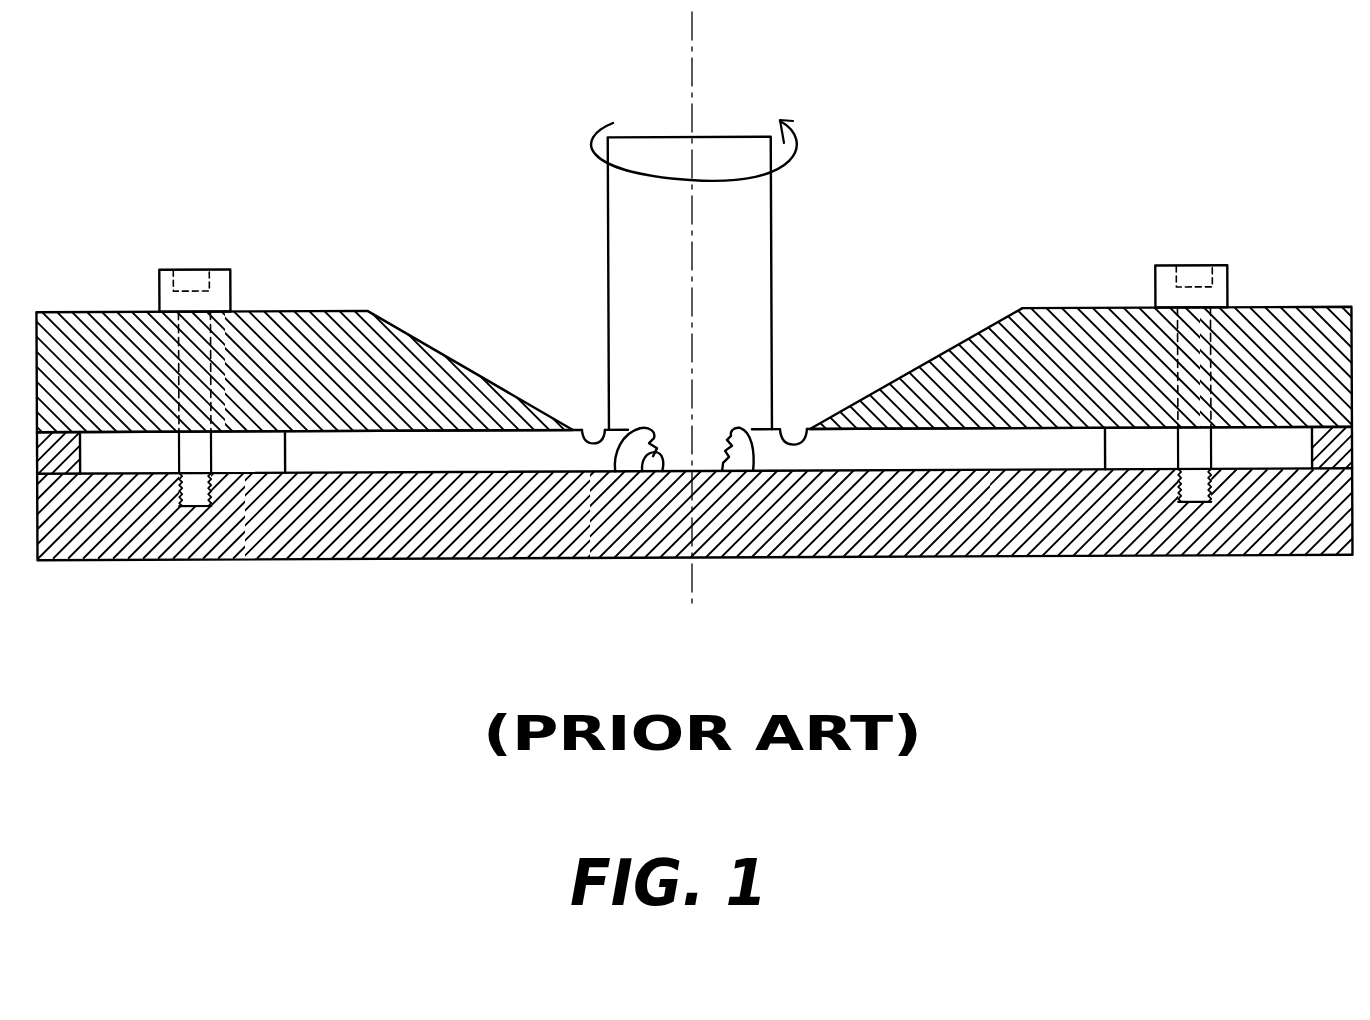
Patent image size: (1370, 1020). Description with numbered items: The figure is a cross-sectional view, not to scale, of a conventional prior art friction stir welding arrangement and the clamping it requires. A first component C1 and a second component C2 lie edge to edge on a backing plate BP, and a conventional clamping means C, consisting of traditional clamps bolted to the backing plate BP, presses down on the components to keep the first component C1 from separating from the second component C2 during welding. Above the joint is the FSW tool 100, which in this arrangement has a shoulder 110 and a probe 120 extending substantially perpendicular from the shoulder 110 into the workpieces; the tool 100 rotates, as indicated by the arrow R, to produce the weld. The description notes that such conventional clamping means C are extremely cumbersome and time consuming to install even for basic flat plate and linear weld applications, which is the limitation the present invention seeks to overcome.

The FSW tool 100 is at (806, 213).
The shoulder 110 is at (617, 472).
The probe 120 is at (643, 472).
The clamping means C is at (137, 312).
The first component C1 is at (590, 441).
The second component C2 is at (806, 430).
The backing plate BP is at (177, 560).
The rotation direction R is at (798, 138).